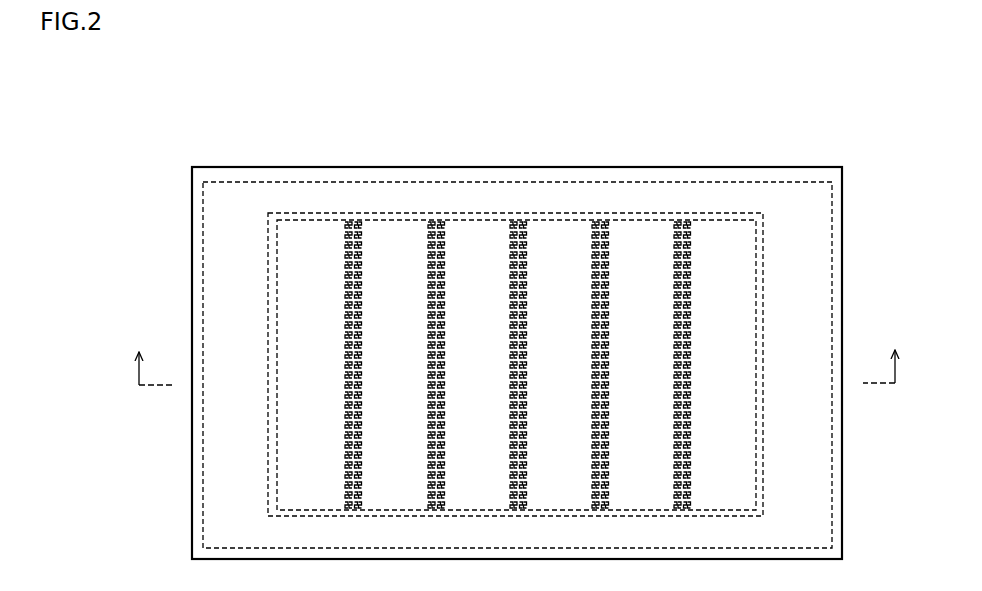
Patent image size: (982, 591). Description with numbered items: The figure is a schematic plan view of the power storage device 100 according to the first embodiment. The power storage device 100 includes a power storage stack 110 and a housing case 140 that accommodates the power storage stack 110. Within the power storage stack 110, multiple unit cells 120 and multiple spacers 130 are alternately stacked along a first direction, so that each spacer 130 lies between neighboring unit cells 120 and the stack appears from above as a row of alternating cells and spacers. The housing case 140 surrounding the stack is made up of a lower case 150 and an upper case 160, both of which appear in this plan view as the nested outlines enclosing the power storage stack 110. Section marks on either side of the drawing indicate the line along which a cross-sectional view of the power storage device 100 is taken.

The heater 100 is at (492, 315).
The heating element region 110 is at (515, 294).
The conductive layer portion 120 is at (740, 104).
The heat generating resistor 130 is at (353, 215).
The frame body 140 is at (459, 363).
The inner frame portion 150 is at (203, 275).
The outer frame portion 160 is at (192, 228).